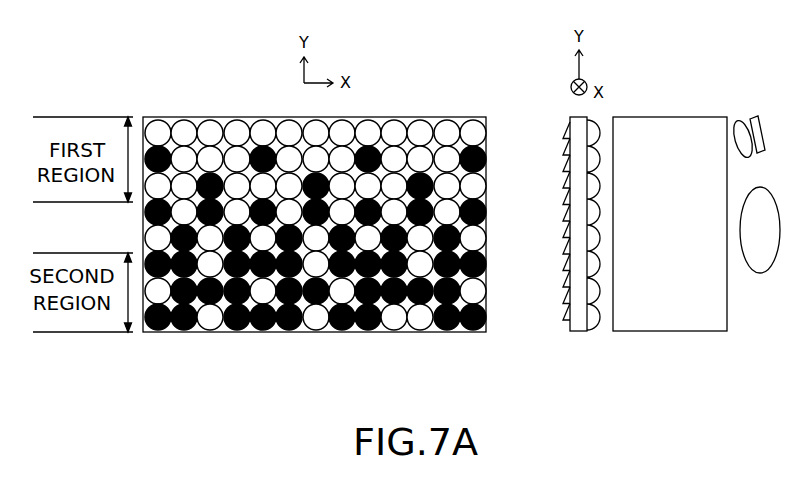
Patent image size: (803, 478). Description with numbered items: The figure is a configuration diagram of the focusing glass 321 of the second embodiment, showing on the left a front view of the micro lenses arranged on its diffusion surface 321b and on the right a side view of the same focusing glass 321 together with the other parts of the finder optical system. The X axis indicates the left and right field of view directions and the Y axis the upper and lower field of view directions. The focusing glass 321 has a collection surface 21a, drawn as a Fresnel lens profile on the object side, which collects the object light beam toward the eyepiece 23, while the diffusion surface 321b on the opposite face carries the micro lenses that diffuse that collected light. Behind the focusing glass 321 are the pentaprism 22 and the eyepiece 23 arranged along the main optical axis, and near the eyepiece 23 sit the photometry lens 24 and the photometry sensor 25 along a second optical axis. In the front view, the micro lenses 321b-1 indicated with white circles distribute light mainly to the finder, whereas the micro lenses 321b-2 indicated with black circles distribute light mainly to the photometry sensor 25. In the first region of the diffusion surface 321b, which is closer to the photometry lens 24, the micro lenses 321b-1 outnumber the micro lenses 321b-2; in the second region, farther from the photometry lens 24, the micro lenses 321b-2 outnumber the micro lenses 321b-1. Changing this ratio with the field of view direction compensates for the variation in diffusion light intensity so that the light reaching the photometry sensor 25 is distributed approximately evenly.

The focusing glass 321 is at (358, 216).
The micro lenses 321b-1 is at (154, 120).
The micro lenses 321b-2 is at (157, 331).
The diffusion surface 321b is at (596, 297).
The collection surface 21a is at (562, 306).
The pentaprism 22 is at (710, 331).
The eyepiece 23 is at (767, 273).
The photometry lens 24 is at (740, 120).
The photometry sensor 25 is at (757, 115).